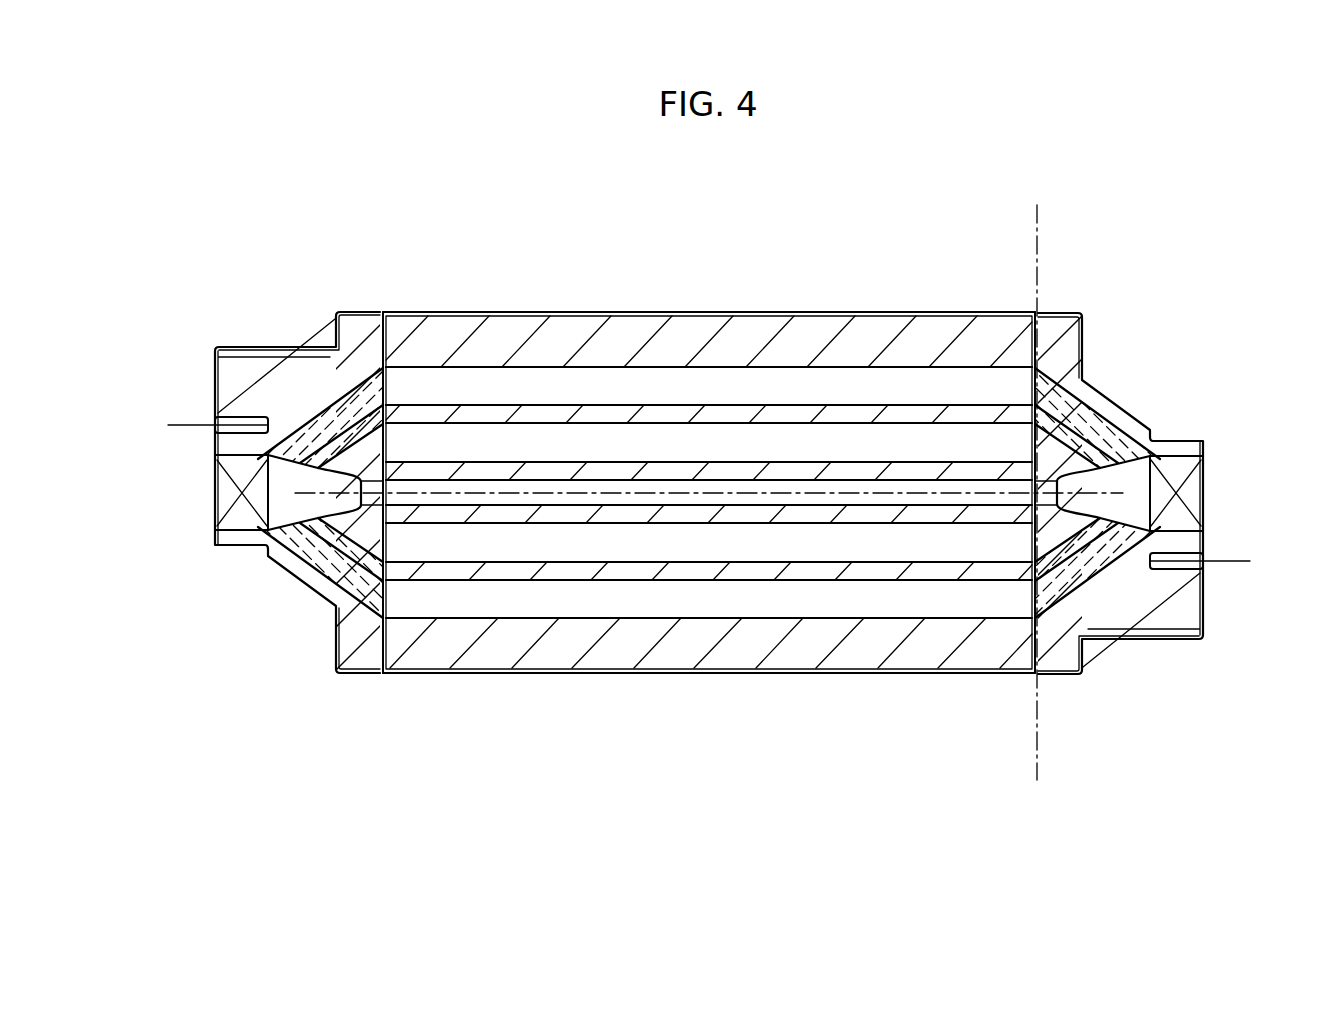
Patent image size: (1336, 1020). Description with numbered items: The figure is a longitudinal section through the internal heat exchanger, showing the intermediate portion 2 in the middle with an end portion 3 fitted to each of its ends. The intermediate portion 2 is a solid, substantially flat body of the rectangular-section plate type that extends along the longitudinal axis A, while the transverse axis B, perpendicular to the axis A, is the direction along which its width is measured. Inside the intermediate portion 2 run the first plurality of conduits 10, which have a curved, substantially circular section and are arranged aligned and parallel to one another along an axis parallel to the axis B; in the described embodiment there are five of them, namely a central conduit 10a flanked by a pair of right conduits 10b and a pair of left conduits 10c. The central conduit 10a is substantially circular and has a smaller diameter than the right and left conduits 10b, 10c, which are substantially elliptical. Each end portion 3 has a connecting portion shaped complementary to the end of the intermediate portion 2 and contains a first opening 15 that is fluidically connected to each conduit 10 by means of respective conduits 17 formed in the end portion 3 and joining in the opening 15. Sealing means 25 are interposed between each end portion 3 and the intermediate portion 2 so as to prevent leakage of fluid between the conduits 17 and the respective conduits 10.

The intermediate portion 2 is at (786, 305).
The end portions 3 is at (351, 302).
The conduits 10 is at (876, 623).
The central conduit 10a is at (432, 499).
The right conduits 10b is at (582, 553).
The left conduits 10c is at (703, 425).
The first opening 15 is at (227, 521).
The conduits 17 is at (373, 432).
The sealing means 25 is at (384, 681).
The longitudinal axis A is at (557, 492).
The transverse axis B is at (1040, 745).